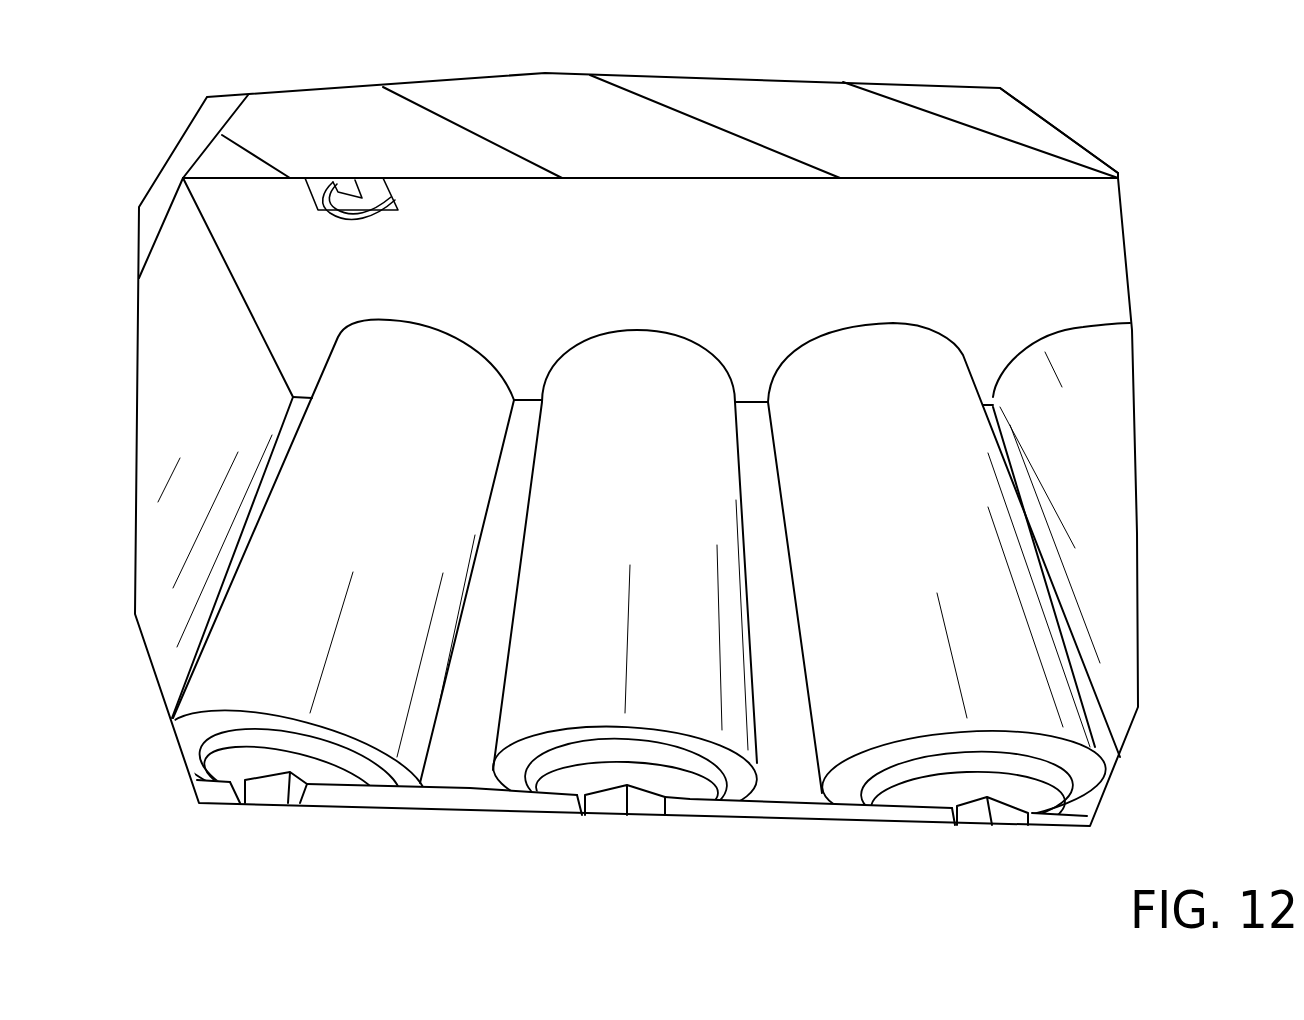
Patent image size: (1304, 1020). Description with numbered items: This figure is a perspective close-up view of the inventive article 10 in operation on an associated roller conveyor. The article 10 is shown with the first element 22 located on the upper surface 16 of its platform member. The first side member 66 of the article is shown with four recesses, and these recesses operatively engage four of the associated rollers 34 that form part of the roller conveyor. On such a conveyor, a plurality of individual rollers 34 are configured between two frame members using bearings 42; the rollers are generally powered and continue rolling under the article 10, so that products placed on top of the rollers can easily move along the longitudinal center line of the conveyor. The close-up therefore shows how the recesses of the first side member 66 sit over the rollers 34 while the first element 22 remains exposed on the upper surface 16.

The article 10 is at (1097, 228).
The upper surface 16 is at (1103, 157).
The first element 22 is at (983, 108).
The first side member 66 is at (1090, 285).
The rollers 34 is at (1113, 513).
The bearings 42 is at (263, 793).